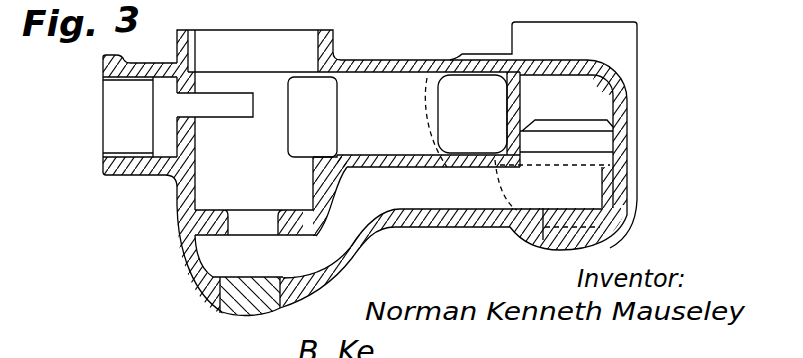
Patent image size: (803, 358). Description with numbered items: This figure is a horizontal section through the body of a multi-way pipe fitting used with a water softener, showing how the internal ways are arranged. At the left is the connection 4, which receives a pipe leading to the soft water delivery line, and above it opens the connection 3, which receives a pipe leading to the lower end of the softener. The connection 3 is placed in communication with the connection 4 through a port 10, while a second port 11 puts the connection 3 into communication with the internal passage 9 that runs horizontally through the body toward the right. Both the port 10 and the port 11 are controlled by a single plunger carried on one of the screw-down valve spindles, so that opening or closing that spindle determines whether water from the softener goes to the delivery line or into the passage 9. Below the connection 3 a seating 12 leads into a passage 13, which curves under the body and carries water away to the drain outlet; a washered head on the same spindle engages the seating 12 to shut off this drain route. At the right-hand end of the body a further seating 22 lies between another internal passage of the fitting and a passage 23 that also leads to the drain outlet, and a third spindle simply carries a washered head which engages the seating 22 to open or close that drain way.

The connection 3 is at (253, 48).
The connection 4 is at (117, 115).
The internal passage 9 is at (413, 80).
The port 10 is at (218, 108).
The port 11 is at (313, 113).
The seating 12 is at (240, 221).
The passage 13 is at (395, 187).
The seating 22 is at (587, 142).
The passage 23 is at (590, 93).